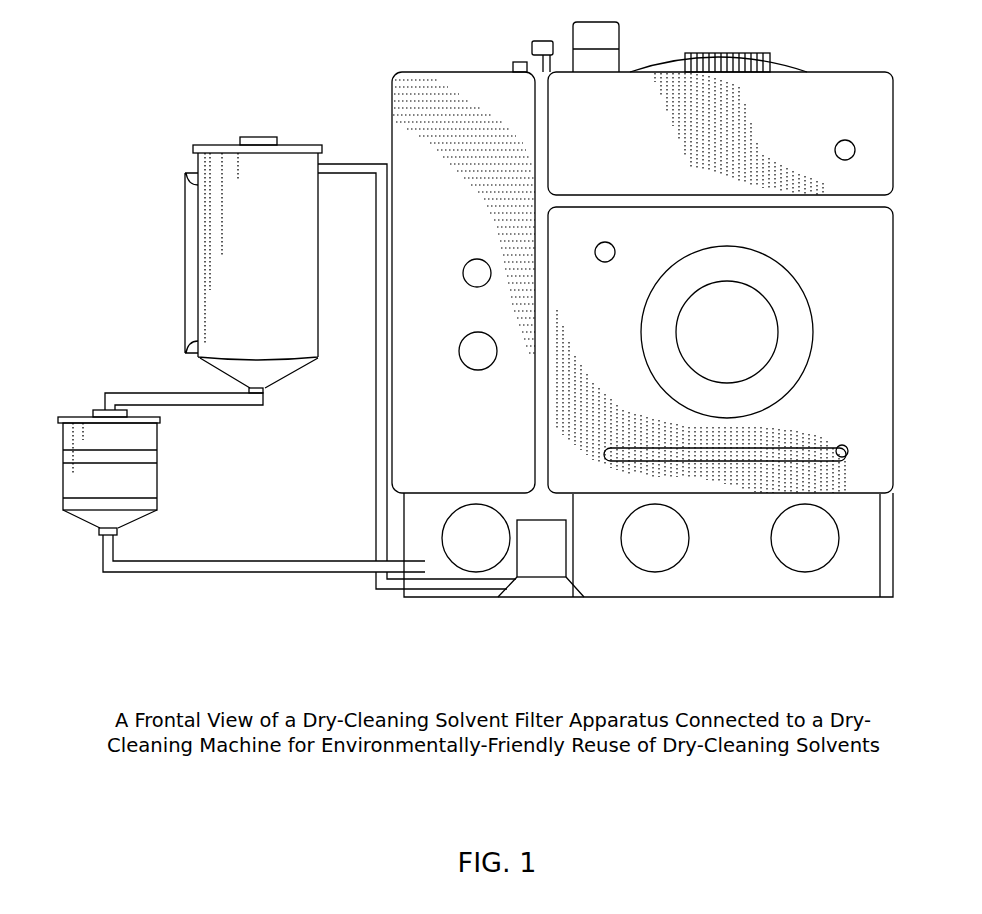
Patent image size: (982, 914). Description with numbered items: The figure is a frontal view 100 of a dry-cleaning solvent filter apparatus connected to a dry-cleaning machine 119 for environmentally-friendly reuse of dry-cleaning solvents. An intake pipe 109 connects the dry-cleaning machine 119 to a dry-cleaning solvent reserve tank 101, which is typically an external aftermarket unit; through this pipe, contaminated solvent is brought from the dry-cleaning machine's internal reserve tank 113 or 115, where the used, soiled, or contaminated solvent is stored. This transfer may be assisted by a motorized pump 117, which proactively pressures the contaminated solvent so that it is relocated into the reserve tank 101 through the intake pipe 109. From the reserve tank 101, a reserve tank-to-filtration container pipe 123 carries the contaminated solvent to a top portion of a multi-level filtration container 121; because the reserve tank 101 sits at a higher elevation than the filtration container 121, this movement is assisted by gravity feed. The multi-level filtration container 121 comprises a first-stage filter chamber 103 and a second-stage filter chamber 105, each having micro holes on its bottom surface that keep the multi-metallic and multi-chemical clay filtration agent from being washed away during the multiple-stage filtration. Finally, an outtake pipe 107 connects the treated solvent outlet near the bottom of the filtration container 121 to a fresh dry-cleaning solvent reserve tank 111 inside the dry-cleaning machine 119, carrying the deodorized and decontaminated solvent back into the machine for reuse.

The frontal view 100 is at (470, 811).
The dry-cleaning solvent reserve tank 101 is at (253, 265).
The first-stage filter chamber 103 is at (159, 452).
The second-stage filter chamber 105 is at (158, 500).
The outtake pipe 107 is at (201, 576).
The intake pipe 109 is at (362, 158).
The fresh dry-cleaning solvent reserve tank 111 is at (476, 538).
The dry-cleaning machine's internal reserve tank 113 is at (655, 538).
The dry-cleaning machine's internal reserve tank 115 is at (805, 538).
The motorized pump 117 is at (541, 558).
The dry-cleaning machine 119 is at (727, 332).
The multi-level filtration container 121 is at (75, 415).
The reserve tank-to-filtration container pipe 123 is at (183, 387).